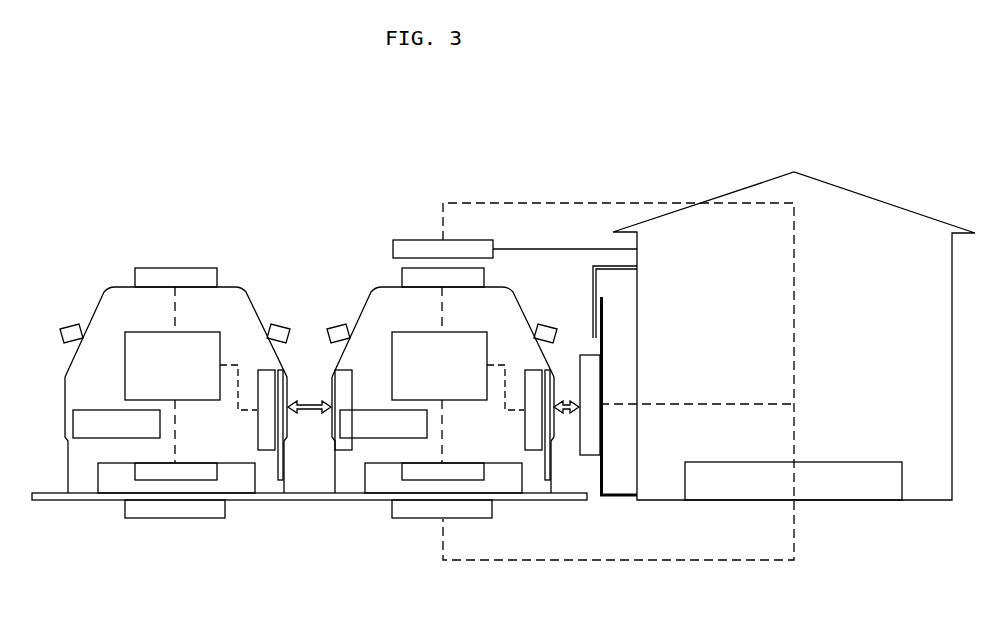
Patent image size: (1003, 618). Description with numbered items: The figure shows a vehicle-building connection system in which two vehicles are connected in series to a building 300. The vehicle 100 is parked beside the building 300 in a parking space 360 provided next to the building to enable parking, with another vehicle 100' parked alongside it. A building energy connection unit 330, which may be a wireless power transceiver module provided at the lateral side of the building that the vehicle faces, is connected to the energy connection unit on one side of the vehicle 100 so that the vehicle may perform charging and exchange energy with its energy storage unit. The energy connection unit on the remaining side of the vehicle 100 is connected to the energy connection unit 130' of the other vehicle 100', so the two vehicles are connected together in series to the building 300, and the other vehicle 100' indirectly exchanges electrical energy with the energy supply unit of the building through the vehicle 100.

The other vehicle 100' is at (163, 376).
The vehicle 100 is at (462, 379).
The energy connection unit of another vehicle 130' is at (273, 457).
The building 300 is at (842, 158).
The building energy connection unit 330 is at (598, 433).
The parking space 360 is at (93, 500).